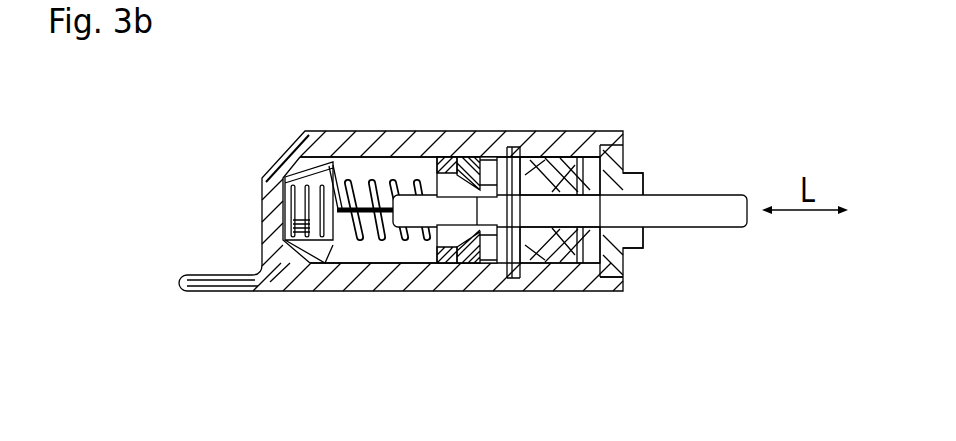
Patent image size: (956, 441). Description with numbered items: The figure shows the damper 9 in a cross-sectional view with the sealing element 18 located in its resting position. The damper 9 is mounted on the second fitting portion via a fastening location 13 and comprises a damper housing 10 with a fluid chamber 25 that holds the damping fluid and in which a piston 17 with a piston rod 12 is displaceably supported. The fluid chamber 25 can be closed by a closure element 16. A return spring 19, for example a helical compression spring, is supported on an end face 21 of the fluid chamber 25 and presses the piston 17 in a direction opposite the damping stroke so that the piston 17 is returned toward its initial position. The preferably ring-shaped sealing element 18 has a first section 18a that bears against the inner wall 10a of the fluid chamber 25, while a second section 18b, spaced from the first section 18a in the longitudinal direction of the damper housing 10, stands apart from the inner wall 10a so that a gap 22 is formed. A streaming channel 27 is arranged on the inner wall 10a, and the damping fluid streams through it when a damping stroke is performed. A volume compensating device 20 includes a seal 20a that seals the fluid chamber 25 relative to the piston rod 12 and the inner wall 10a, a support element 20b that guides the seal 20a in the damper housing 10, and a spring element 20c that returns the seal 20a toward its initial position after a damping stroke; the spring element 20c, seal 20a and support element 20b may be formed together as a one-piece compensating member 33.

The damper 9 is at (248, 129).
The damper housing 10 is at (303, 285).
The inner wall 10a is at (362, 150).
The piston rod 12 is at (725, 217).
The fastening location 13 is at (223, 277).
The closure element 16 is at (627, 273).
The piston 17 is at (500, 272).
The sealing element 18 is at (452, 265).
The first section 18a is at (455, 165).
The second section 18b is at (481, 165).
The return spring 19 is at (362, 245).
The volume compensating device 20 is at (585, 273).
The seal 20a is at (532, 165).
The support element 20b is at (567, 165).
The spring element 20c is at (602, 165).
The end face 21 is at (280, 193).
The gap 22 is at (470, 165).
The fluid chamber 25 is at (402, 263).
The streaming channel 27 is at (328, 162).
The compensating member 33 is at (580, 210).